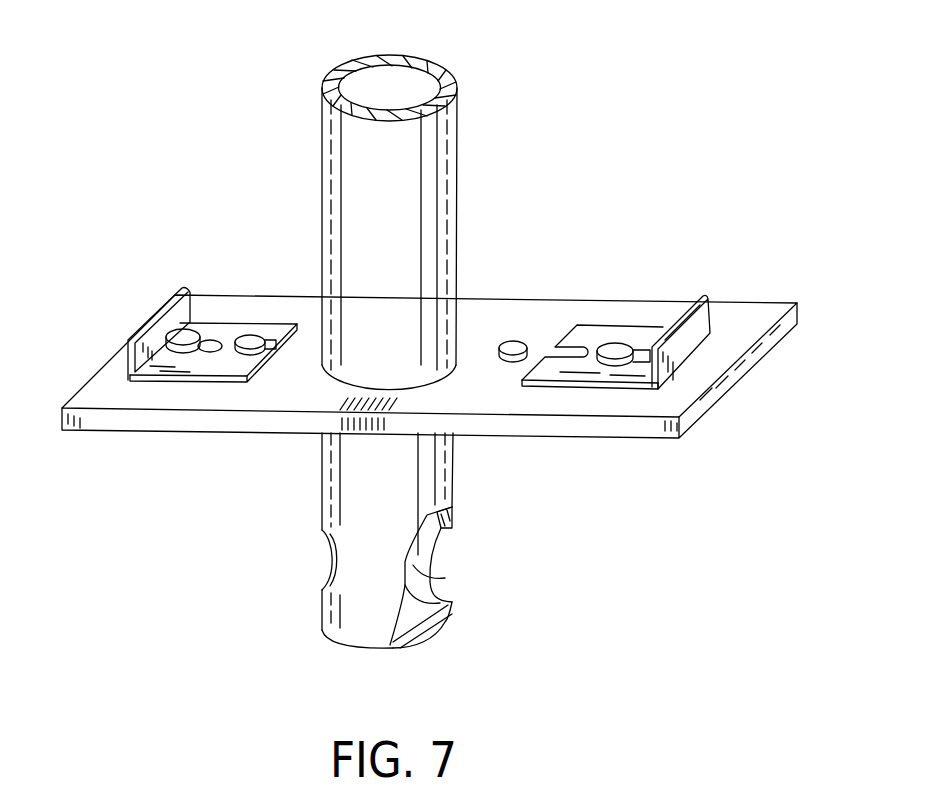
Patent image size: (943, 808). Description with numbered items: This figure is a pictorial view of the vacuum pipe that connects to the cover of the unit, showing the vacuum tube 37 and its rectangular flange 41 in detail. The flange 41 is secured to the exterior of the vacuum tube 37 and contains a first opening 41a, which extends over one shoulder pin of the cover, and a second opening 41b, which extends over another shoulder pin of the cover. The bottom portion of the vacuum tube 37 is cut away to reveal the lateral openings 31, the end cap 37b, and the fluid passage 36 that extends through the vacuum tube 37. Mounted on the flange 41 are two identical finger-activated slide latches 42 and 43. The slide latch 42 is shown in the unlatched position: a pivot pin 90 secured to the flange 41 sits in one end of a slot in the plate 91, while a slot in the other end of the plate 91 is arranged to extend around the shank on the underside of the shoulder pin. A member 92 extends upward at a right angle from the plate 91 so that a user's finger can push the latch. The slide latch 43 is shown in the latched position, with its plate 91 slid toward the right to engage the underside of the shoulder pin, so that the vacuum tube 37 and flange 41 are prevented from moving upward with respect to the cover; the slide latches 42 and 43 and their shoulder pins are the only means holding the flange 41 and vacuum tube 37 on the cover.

The lateral openings 31 is at (335, 556).
The fluid passage 36 is at (394, 84).
The vacuum tube 37 is at (432, 182).
The end cap 37b is at (413, 642).
The flange 41 is at (773, 312).
The first opening 41a is at (528, 350).
The second opening 41b is at (246, 338).
The slide latch 42 is at (697, 283).
The slide latch 43 is at (187, 279).
The pivot pin 90 is at (613, 345).
The plate 91 is at (640, 330).
The member 92 is at (700, 315).